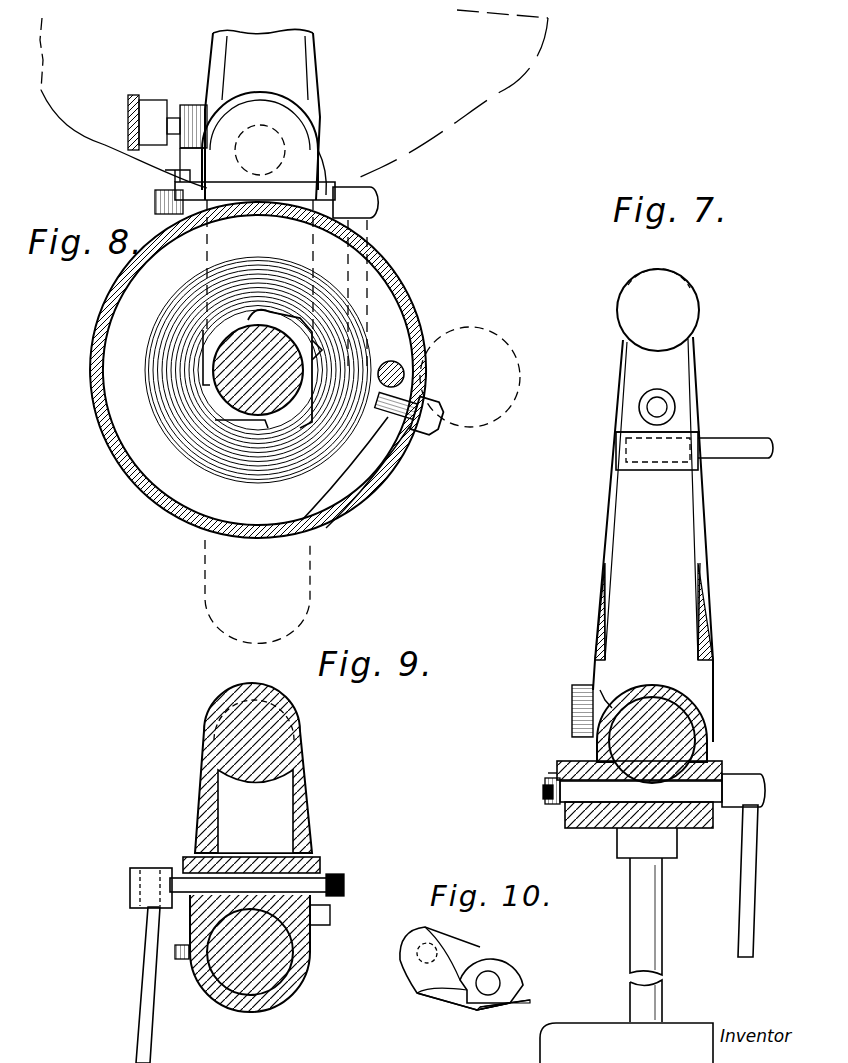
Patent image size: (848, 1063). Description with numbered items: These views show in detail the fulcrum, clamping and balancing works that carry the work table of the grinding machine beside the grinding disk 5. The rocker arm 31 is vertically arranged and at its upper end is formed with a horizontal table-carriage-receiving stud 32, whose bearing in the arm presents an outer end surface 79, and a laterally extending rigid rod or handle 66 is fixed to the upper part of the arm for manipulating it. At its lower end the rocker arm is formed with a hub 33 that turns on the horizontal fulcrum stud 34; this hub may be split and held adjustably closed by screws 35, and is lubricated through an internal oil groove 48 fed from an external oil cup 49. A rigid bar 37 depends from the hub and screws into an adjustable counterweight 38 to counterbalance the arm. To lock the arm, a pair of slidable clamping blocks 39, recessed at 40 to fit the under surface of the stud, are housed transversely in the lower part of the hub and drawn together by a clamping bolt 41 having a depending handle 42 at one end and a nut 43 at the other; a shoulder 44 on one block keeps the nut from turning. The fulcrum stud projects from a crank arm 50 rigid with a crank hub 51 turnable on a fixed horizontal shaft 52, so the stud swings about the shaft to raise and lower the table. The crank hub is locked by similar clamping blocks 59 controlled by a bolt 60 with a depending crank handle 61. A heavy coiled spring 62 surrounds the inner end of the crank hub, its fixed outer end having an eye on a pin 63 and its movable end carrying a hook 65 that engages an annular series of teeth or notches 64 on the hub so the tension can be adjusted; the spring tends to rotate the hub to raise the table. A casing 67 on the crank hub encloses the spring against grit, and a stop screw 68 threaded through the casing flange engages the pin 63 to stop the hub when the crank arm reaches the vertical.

In FIG. 8, the grinding disk 5 is at (510, 68).
In FIG. 8, the rocker arm 31 is at (292, 62).
In FIG. 7, the rocker arm 31 is at (653, 539).
In FIG. 7, the table-carriage-receiving stud 32 is at (658, 310).
In FIG. 8, the hub 33 is at (318, 132).
In FIG. 7, the hub 33 is at (690, 690).
In FIG. 8, the fulcrum stud 34 is at (362, 384).
In FIG. 7, the fulcrum stud 34 is at (652, 740).
In FIG. 9, the fulcrum stud 34 is at (298, 710).
In FIG. 7, the screws 35 is at (572, 730).
In FIG. 7, the bar 37 is at (655, 920).
In FIG. 7, the counterweight 38 is at (578, 1023).
In FIG. 7, the clamping blocks 39 is at (590, 825).
In FIG. 7, the recess 40 is at (575, 770).
In FIG. 10, the recess 40 is at (410, 985).
In FIG. 7, the clamping bolt 41 is at (625, 795).
In FIG. 8, the handle 42 is at (372, 228).
In FIG. 7, the handle 42 is at (755, 880).
In FIG. 8, the nut 43 is at (155, 202).
In FIG. 7, the nut 43 is at (548, 800).
In FIG. 8, the shoulder 44 is at (175, 180).
In FIG. 7, the shoulder 44 is at (548, 772).
In FIG. 10, the shoulder 44 is at (480, 1010).
In FIG. 7, the oil groove 48 is at (612, 705).
In FIG. 8, the oil cup 49 is at (145, 108).
In FIG. 8, the crank arm 50 is at (320, 185).
In FIG. 9, the crank arm 50 is at (225, 820).
In FIG. 9, the crank hub 51 is at (275, 1005).
In FIG. 8, the shaft 52 is at (258, 370).
In FIG. 9, the shaft 52 is at (250, 952).
In FIG. 9, the clamping blocks 59 is at (190, 910).
In FIG. 10, the clamping blocks 59 is at (475, 950).
In FIG. 9, the bolt 60 is at (350, 885).
In FIG. 9, the crank handle 61 is at (148, 970).
In FIG. 8, the coiled spring 62 is at (190, 440).
In FIG. 8, the pin 63 is at (400, 365).
In FIG. 8, the teeth or notches 64 is at (320, 362).
In FIG. 8, the hook 65 is at (263, 318).
In FIG. 7, the rod or handle 66 is at (745, 458).
In FIG. 8, the spring casing 67 is at (110, 438).
In FIG. 8, the stop screw 68 is at (405, 425).
In FIG. 7, the outer end surface of feed screw bearing 79 is at (668, 402).